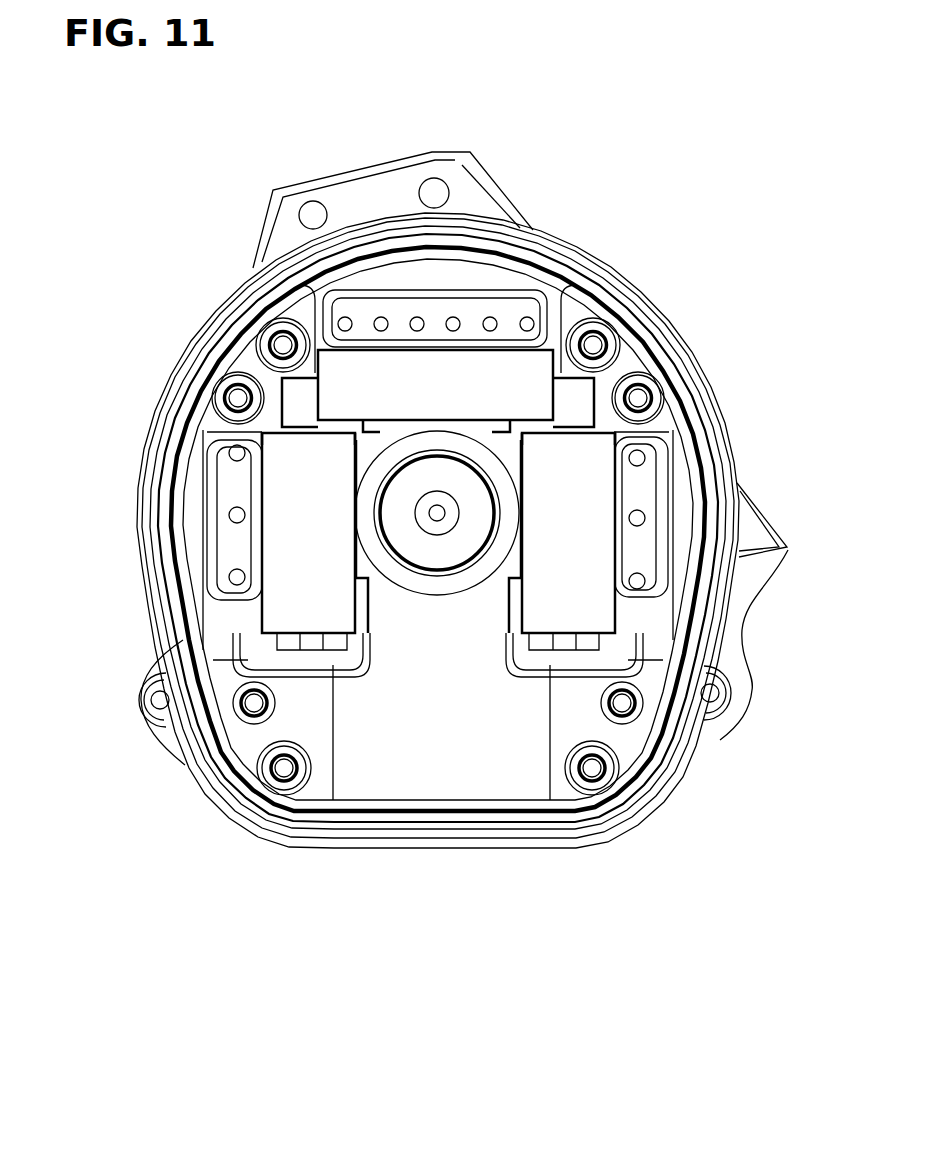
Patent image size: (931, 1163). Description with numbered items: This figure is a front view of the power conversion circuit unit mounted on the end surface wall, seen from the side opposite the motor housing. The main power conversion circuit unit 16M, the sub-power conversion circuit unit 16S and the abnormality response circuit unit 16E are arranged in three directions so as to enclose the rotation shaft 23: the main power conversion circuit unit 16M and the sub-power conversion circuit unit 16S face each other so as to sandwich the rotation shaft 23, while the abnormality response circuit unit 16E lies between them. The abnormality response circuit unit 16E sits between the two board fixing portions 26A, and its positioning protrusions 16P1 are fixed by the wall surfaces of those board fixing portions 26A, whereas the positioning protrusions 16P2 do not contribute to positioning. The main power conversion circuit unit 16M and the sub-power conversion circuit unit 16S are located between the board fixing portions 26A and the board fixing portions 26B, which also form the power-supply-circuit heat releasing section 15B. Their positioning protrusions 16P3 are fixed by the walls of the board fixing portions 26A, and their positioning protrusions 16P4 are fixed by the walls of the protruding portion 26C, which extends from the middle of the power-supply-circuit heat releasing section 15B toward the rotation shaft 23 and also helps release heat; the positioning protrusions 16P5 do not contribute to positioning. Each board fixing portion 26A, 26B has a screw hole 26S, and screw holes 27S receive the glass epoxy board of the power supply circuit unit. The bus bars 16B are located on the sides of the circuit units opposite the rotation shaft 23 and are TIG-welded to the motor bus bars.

The power-supply-circuit heat releasing section 15B is at (418, 800).
The bus bar 16B is at (443, 325).
The abnormality response circuit unit 16E is at (435, 385).
The main power conversion circuit unit 16M is at (301, 555).
The sub-power conversion circuit unit 16S is at (574, 555).
The positioning protrusion 16P1 is at (310, 385).
The positioning protrusion 16P2 is at (375, 432).
The positioning protrusion 16P3 is at (267, 433).
The positioning protrusion 16P4 is at (350, 587).
The positioning protrusion 16P5 is at (350, 450).
The rotation shaft 23 is at (440, 518).
The board fixing portion 26A is at (258, 368).
The board fixing portion 26B is at (220, 783).
The protruding portion 26C is at (428, 630).
The screw hole 26S is at (283, 345).
The screw hole 27S is at (220, 395).